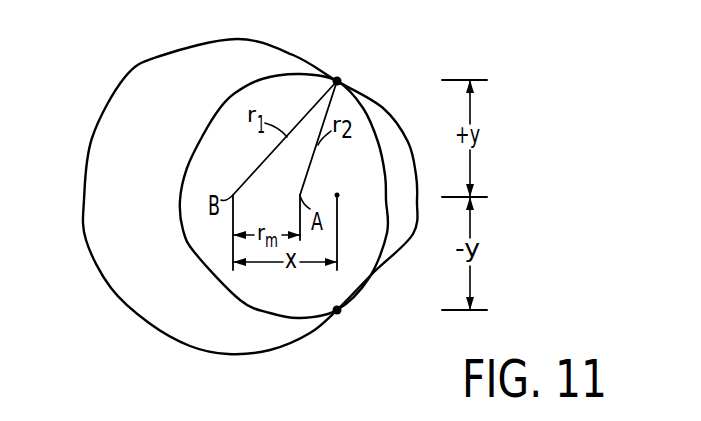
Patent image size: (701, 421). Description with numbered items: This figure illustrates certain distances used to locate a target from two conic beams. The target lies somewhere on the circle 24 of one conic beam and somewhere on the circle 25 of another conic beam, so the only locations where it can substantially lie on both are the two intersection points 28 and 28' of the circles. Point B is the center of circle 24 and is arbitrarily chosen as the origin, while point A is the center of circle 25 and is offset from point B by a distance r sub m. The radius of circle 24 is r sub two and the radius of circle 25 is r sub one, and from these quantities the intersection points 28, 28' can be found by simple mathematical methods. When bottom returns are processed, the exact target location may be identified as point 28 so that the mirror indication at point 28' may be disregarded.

The circle 24 is at (84, 210).
The circle 25 is at (218, 107).
The intersection point 28 is at (355, 339).
The intersection point 28' is at (363, 54).